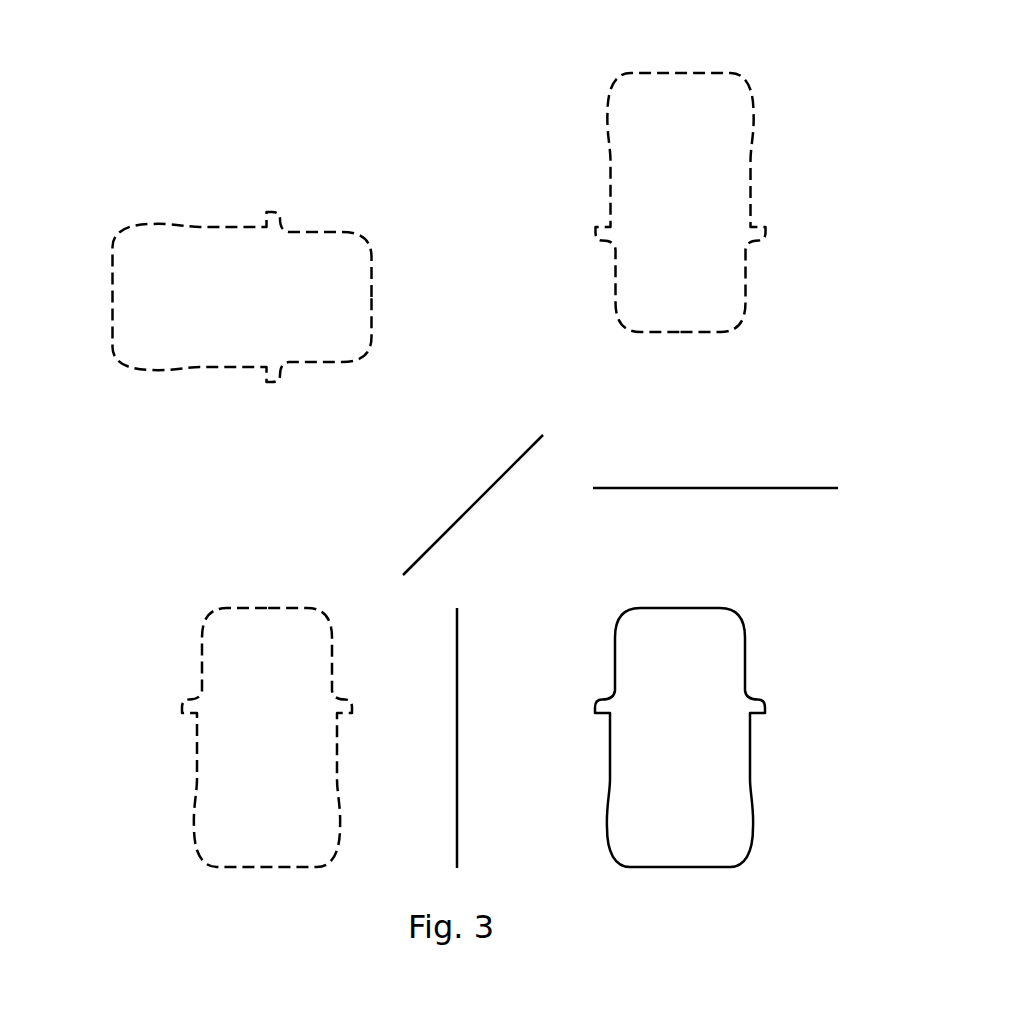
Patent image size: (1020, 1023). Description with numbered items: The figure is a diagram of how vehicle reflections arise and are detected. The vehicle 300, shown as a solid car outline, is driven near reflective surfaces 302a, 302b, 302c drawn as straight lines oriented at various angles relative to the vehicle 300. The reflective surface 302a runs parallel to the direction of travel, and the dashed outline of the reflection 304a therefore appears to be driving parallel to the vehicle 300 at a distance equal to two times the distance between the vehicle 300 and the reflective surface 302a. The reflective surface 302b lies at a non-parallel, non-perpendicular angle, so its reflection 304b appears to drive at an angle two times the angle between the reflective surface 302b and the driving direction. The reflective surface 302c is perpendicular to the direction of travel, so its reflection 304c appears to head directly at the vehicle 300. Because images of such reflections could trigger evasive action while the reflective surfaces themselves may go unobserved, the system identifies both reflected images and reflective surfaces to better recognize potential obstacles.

The vehicle 300 is at (668, 867).
The reflective surface 302a is at (457, 817).
The reflective surface 302b is at (473, 505).
The reflective surface 302c is at (702, 488).
The reflection 304a is at (253, 606).
The reflection 304b is at (143, 225).
The reflection 304c is at (610, 172).